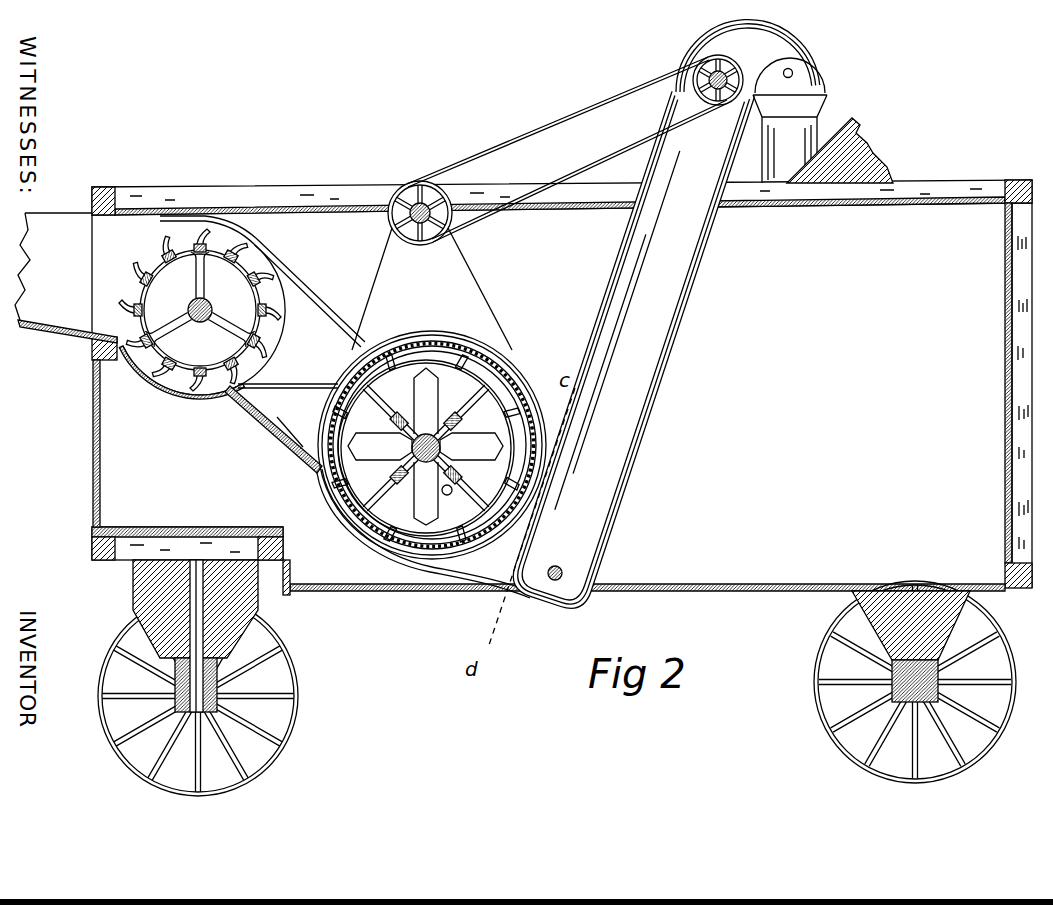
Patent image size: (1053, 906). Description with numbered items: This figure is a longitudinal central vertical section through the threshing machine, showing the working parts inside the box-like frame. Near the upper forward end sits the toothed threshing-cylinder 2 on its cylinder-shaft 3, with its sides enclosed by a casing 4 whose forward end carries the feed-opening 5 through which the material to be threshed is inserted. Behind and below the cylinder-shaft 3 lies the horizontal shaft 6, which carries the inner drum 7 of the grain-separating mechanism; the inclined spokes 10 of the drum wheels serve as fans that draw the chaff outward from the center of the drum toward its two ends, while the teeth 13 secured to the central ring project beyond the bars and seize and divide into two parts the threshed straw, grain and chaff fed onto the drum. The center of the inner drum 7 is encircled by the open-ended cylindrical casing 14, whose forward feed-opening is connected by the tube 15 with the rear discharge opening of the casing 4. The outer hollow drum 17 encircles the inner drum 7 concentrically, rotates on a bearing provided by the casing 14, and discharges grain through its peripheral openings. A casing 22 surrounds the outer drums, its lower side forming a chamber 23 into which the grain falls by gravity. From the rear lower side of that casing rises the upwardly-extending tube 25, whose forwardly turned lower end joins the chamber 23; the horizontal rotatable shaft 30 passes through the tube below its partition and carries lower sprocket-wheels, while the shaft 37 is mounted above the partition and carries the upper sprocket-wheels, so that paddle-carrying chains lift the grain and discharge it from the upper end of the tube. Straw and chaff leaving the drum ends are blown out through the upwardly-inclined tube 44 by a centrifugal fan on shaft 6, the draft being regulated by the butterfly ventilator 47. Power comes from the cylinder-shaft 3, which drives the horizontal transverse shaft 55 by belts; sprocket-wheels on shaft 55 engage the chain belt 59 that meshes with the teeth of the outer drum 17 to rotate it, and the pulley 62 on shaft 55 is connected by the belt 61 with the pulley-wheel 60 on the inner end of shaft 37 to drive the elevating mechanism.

The toothed threshing-cylinder 2 is at (200, 310).
The cylinder-shaft 3 is at (200, 324).
The casing 4 is at (265, 253).
The feed-opening 5 is at (66, 278).
The horizontal shaft 6 is at (453, 492).
The inner drum 7 is at (843, 206).
The spokes 10 is at (430, 416).
The teeth 13 is at (518, 393).
The cylindrical casing 14 is at (491, 358).
The tube 15 is at (281, 403).
The outer rotatable hollow drum 17 is at (452, 350).
The casing 22 is at (374, 520).
The chamber 23 is at (481, 582).
The upwardly-extending tube 25 is at (645, 386).
The horizontal rotatable shaft 30 is at (560, 565).
The horizontal rotatable shaft 37 is at (731, 72).
The upwardly-inclined tube 44 is at (858, 176).
The ventilator 47 is at (440, 505).
The horizontal transverse shaft 55 is at (445, 196).
The chain belt 59 is at (474, 266).
The pulley-wheel 60 is at (693, 86).
The belt 61 is at (588, 116).
The pulley 62 is at (381, 289).